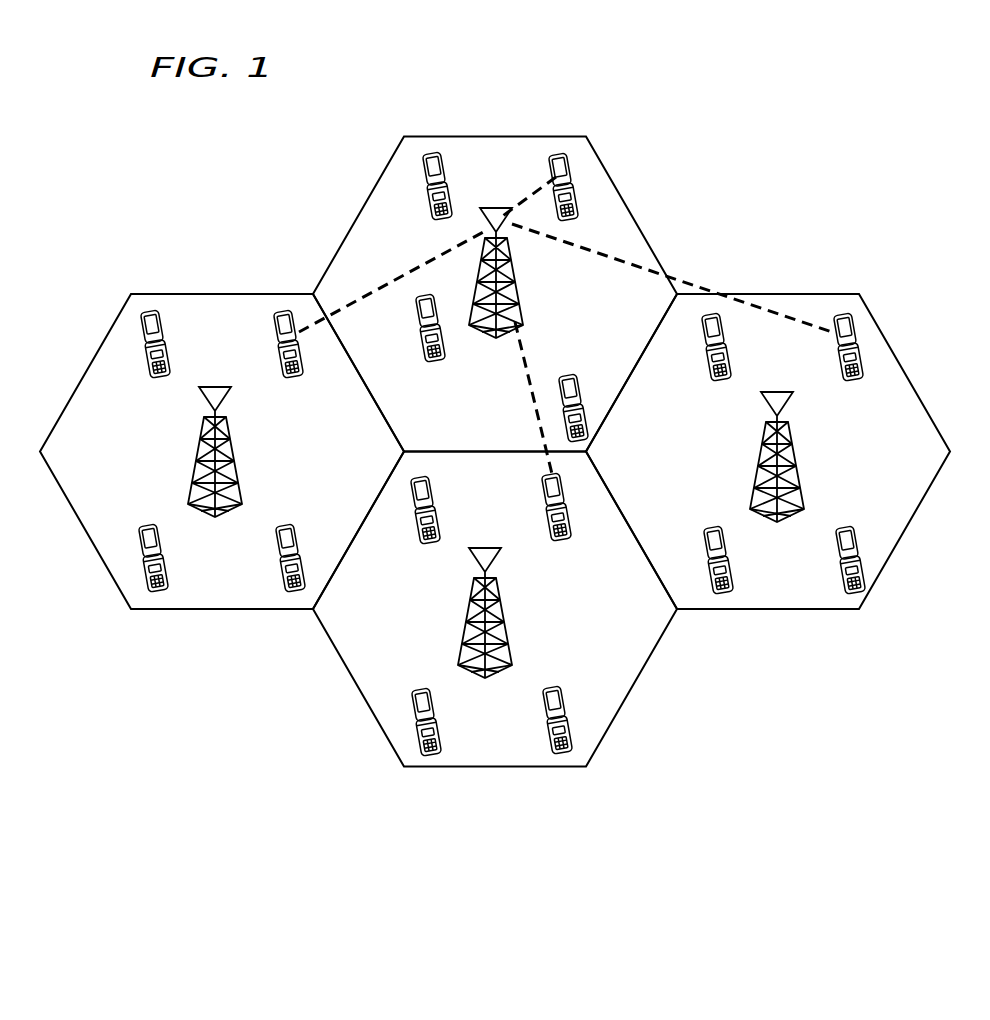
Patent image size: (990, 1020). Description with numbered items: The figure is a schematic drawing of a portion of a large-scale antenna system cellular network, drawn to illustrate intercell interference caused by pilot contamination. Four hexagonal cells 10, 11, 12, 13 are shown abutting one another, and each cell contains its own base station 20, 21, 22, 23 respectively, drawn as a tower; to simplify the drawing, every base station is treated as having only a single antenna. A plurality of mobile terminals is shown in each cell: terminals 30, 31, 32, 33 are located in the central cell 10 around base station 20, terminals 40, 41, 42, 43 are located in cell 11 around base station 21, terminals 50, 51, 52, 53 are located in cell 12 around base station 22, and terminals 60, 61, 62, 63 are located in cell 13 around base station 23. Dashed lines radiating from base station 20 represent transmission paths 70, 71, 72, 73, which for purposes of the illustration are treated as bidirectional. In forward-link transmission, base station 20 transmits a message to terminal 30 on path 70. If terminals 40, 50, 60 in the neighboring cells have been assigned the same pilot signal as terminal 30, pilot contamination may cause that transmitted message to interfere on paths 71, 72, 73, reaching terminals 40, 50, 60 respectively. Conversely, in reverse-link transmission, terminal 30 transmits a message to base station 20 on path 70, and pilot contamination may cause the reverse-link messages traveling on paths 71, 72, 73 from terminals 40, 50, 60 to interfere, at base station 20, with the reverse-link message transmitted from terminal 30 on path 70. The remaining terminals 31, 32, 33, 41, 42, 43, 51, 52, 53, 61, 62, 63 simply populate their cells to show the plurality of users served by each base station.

The cell 10 is at (628, 207).
The cell 11 is at (897, 358).
The cell 12 is at (598, 752).
The cell 13 is at (90, 363).
The base station 20 is at (495, 340).
The base station 21 is at (800, 478).
The base station 22 is at (513, 660).
The base station 23 is at (243, 487).
The mobile terminal 30 is at (570, 152).
The mobile terminal 31 is at (590, 396).
The mobile terminal 32 is at (418, 336).
The mobile terminal 33 is at (430, 152).
The mobile terminal 40 is at (845, 313).
The mobile terminal 41 is at (848, 596).
The mobile terminal 42 is at (723, 596).
The mobile terminal 43 is at (705, 360).
The mobile terminal 50 is at (545, 525).
The mobile terminal 51 is at (557, 756).
The mobile terminal 52 is at (427, 758).
The mobile terminal 53 is at (420, 530).
The mobile terminal 60 is at (284, 311).
The mobile terminal 61 is at (289, 594).
The mobile terminal 62 is at (160, 594).
The mobile terminal 63 is at (150, 311).
The path 70 is at (530, 183).
The path 71 is at (790, 313).
The path 72 is at (528, 350).
The path 73 is at (388, 277).